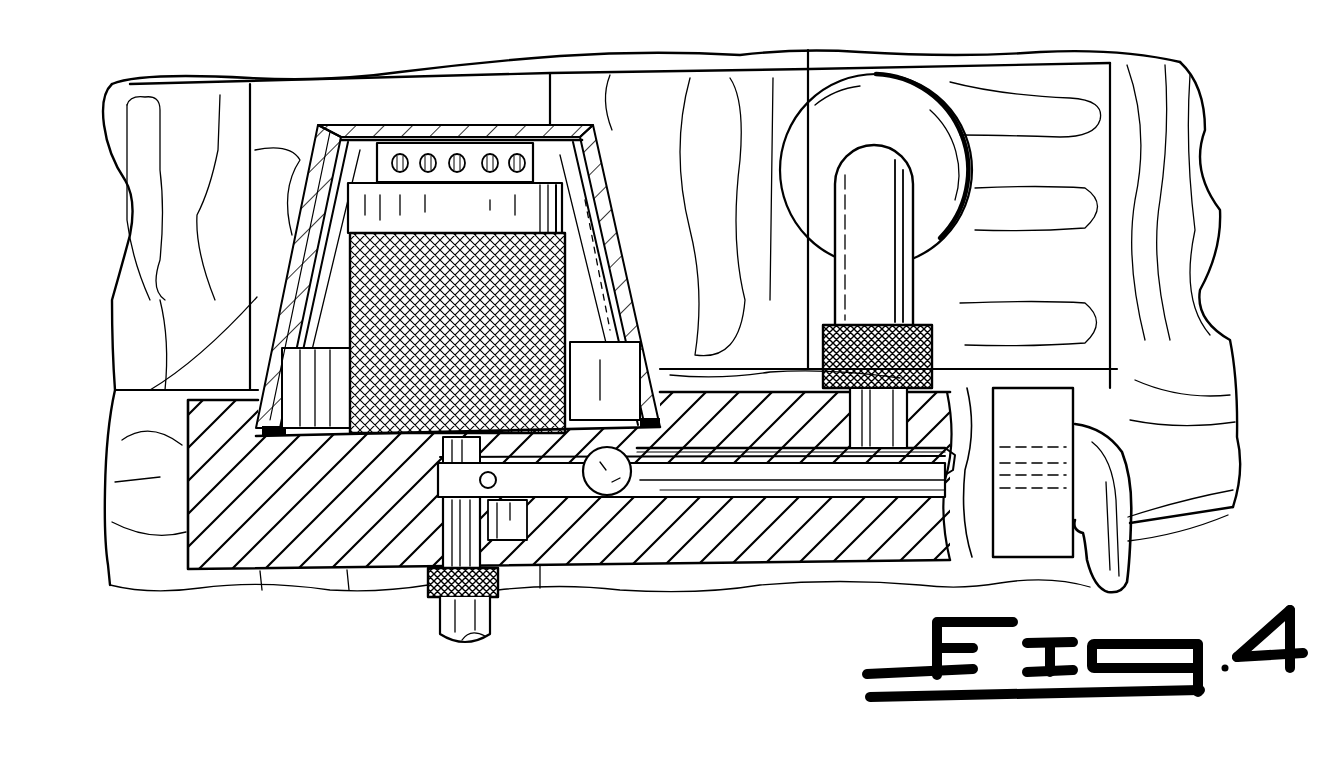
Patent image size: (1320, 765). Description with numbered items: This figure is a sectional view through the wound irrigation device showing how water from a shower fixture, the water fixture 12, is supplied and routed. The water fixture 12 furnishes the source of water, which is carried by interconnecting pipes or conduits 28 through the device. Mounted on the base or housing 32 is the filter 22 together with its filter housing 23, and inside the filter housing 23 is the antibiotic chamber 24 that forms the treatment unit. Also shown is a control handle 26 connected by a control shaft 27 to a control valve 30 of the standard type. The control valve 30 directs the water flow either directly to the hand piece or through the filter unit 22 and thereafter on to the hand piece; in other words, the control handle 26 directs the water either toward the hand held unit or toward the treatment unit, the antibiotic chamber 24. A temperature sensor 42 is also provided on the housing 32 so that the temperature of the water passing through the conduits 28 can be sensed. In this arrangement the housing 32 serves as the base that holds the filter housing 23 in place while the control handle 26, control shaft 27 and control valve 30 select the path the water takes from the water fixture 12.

The water fixture 12 is at (858, 170).
The filter 22 is at (265, 380).
The filter housing 23 is at (305, 180).
The antibiotic chamber 24 is at (410, 148).
The control handle 26 is at (1095, 500).
The control shaft 27 is at (765, 480).
The interconnecting pipes or conduits 28 is at (503, 573).
The control valve 30 is at (605, 485).
The housing 32 is at (1055, 400).
The temperature sensor 42 is at (440, 569).